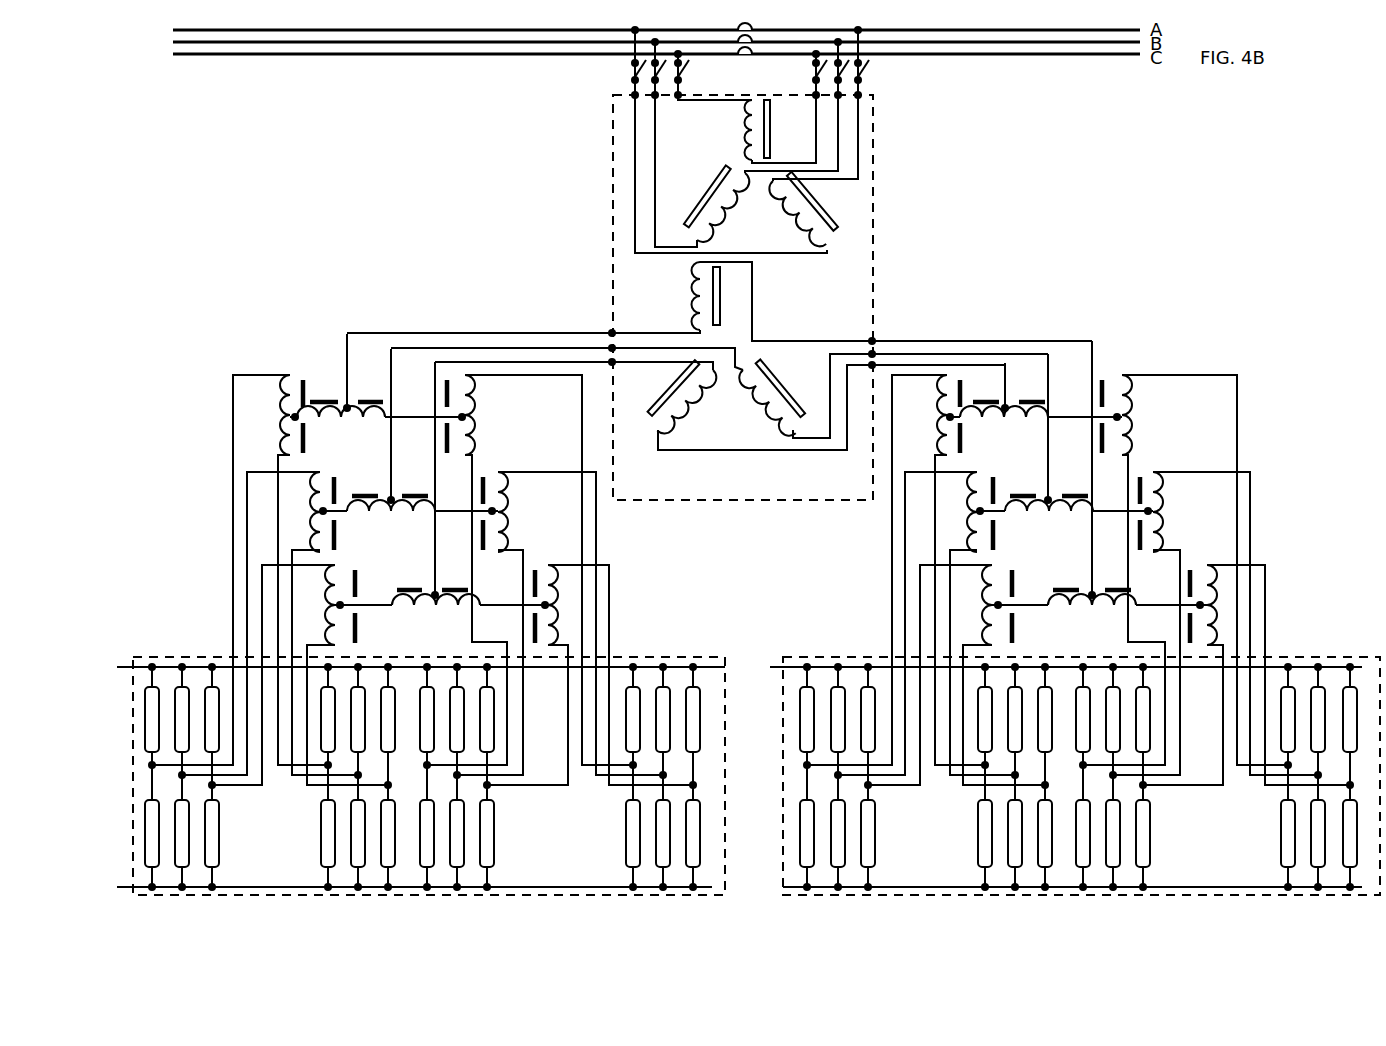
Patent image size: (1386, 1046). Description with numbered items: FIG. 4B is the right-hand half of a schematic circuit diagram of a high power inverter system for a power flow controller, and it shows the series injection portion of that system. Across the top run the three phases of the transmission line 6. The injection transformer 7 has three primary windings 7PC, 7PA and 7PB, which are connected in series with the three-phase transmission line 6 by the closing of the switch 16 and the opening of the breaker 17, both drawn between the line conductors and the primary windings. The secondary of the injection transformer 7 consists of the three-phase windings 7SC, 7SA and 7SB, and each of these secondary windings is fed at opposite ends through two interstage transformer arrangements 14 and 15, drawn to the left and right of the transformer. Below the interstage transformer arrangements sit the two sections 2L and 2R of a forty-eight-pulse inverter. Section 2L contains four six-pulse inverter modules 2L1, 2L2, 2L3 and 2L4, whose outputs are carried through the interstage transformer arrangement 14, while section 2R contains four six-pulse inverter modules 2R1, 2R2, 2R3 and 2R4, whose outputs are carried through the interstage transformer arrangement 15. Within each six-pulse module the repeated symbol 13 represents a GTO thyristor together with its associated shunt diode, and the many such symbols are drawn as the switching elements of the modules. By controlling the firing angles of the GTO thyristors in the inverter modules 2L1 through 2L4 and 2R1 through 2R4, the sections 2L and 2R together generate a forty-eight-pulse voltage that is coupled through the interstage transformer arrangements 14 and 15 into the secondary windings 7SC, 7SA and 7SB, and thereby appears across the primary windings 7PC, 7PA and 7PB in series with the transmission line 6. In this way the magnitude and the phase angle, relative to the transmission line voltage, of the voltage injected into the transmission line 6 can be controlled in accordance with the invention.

The transmission line 6 is at (1024, 58).
The injection transformer 7 is at (719, 297).
The primary winding 7PA is at (815, 205).
The primary winding 7PB is at (718, 213).
The primary winding 7PC is at (748, 138).
The secondary winding 7SA is at (778, 375).
The secondary winding 7SB is at (690, 410).
The secondary winding 7SC is at (696, 306).
The GTO thyristor and shunt diode symbol 13 is at (150, 703).
The interstage transformer arrangement 14 is at (246, 340).
The interstage transformer arrangement 15 is at (1138, 358).
The switch 16 is at (868, 70).
The breaker 17 is at (744, 57).
The inverter section 2L is at (421, 739).
The inverter section 2R is at (1075, 756).
The six-pulse inverter module 2L1 is at (206, 755).
The six-pulse inverter module 2L2 is at (308, 854).
The six-pulse inverter module 2L3 is at (502, 830).
The six-pulse inverter module 2L4 is at (616, 836).
The six-pulse inverter module 2R1 is at (882, 836).
The six-pulse inverter module 2R2 is at (968, 850).
The six-pulse inverter module 2R3 is at (1166, 838).
The six-pulse inverter module 2R4 is at (1270, 838).